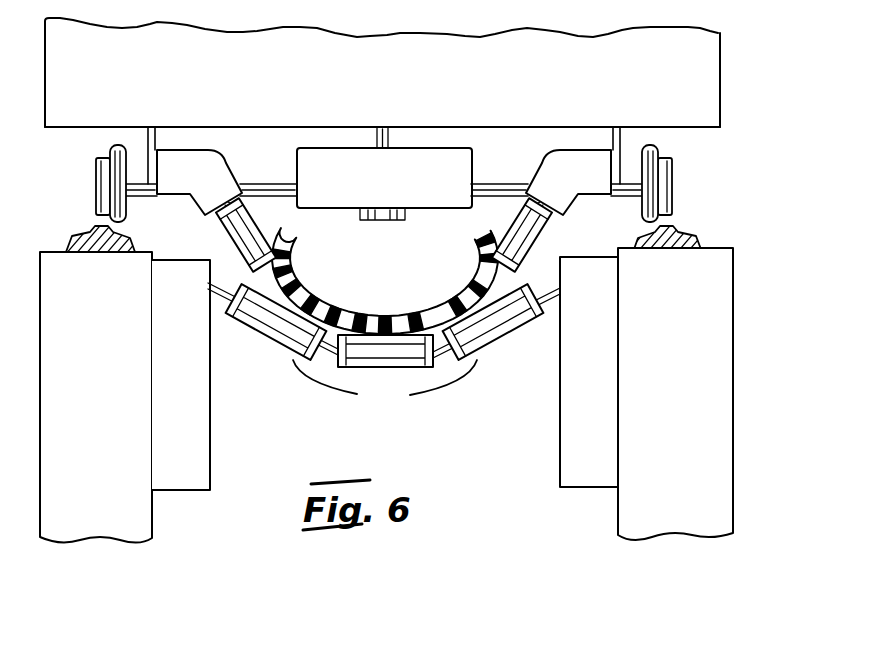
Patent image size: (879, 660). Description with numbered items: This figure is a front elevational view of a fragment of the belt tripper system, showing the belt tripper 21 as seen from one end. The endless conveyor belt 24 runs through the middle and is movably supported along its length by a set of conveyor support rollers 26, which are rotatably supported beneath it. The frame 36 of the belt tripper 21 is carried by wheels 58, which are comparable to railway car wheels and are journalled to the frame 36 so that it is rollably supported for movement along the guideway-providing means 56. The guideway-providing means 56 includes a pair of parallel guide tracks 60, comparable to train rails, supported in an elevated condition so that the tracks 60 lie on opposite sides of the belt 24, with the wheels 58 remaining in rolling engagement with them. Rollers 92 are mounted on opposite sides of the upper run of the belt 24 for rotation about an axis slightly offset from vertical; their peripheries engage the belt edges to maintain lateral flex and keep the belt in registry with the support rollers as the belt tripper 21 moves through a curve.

The belt tripper 21 is at (720, 37).
The frame 36 is at (720, 105).
The wheels 58 is at (95, 174).
The guide tracks 60 is at (68, 239).
The guideway-providing means 56 is at (718, 232).
The conveyor belt 24 is at (300, 238).
The rollers 92 is at (220, 226).
The conveyor support rollers 26 is at (380, 367).